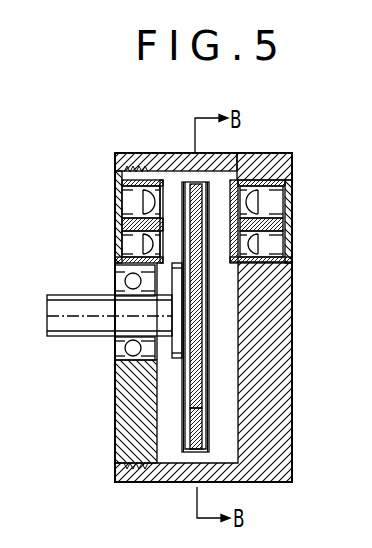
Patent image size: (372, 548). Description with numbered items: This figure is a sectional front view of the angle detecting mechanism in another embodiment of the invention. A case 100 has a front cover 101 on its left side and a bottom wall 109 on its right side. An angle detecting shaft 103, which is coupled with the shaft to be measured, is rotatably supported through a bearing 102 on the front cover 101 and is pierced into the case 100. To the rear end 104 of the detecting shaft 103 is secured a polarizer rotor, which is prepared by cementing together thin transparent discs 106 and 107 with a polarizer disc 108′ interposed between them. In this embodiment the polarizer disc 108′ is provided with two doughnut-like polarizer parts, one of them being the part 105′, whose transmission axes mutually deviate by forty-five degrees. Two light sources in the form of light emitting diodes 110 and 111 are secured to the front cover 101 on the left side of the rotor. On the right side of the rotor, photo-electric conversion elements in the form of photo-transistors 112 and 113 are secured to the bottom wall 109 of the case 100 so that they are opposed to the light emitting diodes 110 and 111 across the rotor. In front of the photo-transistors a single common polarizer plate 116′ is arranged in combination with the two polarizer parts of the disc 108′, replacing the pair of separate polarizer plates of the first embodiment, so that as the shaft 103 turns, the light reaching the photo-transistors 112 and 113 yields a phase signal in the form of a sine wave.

The case 100 is at (166, 153).
The front cover 101 is at (116, 173).
The bearing 102 is at (115, 294).
The angle detecting shaft 103 is at (65, 302).
The rear end of the detecting shaft 104 is at (157, 360).
The doughnut-like polarizer part 105′ is at (205, 390).
The thin transparent disc 106 is at (186, 432).
The thin transparent disc 107 is at (210, 443).
The polarizer disc 108′ is at (216, 403).
The bottom wall 109 is at (282, 162).
The light emitting diode 110 is at (127, 202).
The light emitting diode 111 is at (127, 242).
The photo-transistor 112 is at (277, 198).
The photo-transistor 113 is at (277, 241).
The common polarizer plate 116′ is at (233, 193).